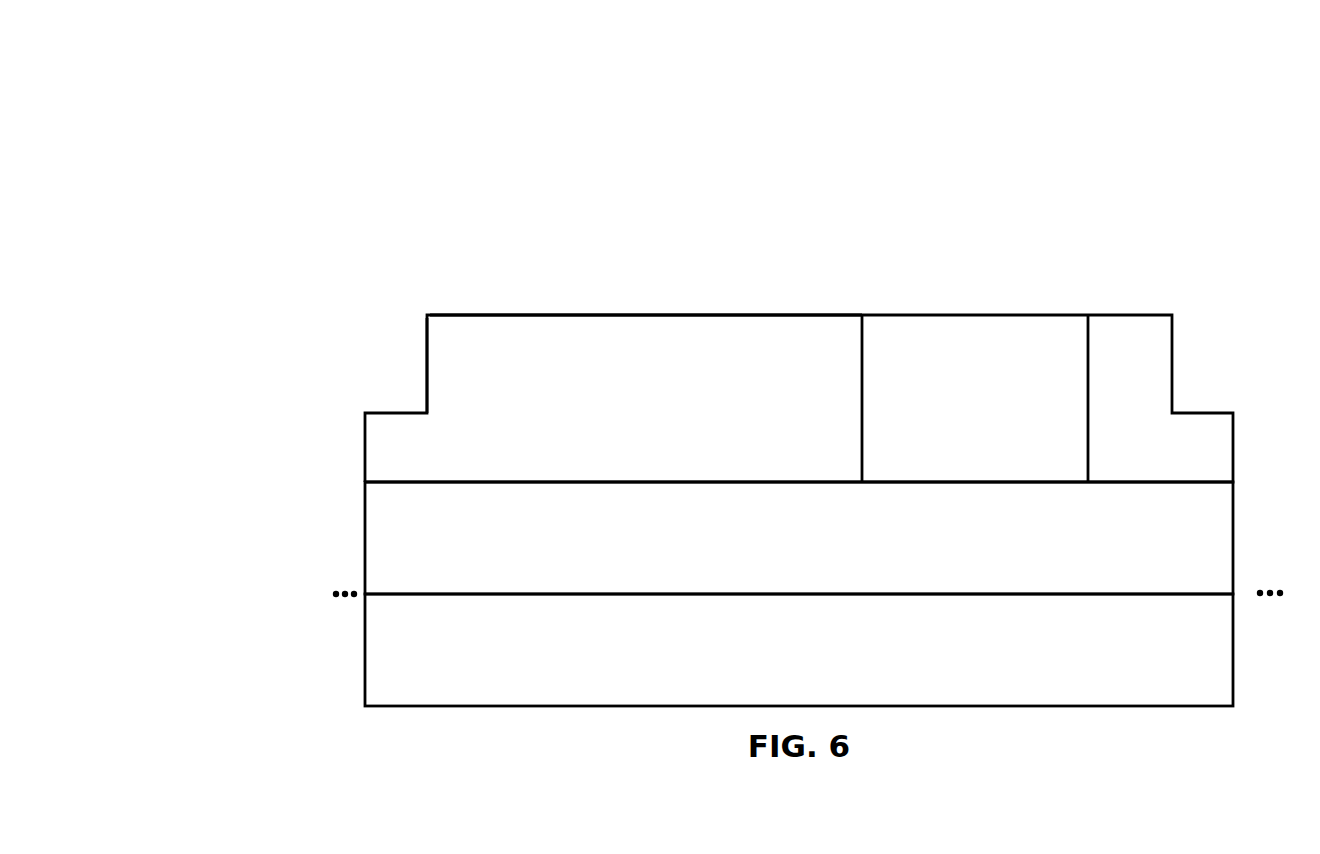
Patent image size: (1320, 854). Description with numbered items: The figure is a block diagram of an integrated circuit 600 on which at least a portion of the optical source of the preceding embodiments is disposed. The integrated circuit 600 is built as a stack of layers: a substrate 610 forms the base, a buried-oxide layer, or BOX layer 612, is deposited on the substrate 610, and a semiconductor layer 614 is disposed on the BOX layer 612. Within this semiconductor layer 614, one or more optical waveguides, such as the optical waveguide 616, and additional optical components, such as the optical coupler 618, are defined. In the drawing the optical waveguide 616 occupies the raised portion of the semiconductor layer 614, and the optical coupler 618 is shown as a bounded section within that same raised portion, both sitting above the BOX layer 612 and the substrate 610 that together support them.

The integrated circuit 600 is at (403, 120).
The substrate 610 is at (799, 650).
The buried-oxide (BOX) layer 612 is at (799, 538).
The semiconductor layer 614 is at (544, 436).
The optical waveguide 616 is at (470, 333).
The optical coupler 618 is at (956, 399).